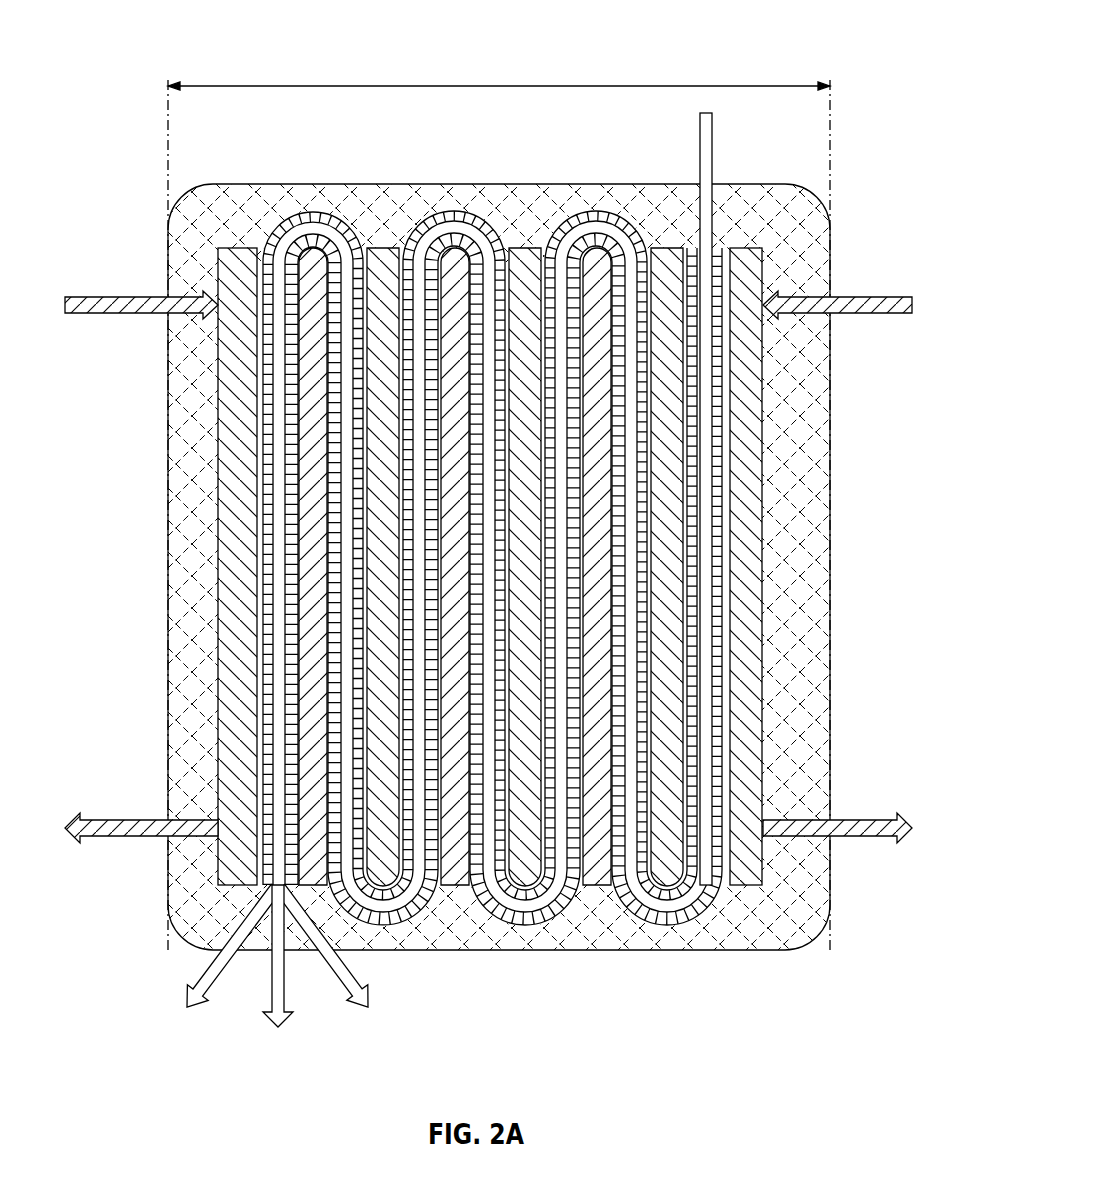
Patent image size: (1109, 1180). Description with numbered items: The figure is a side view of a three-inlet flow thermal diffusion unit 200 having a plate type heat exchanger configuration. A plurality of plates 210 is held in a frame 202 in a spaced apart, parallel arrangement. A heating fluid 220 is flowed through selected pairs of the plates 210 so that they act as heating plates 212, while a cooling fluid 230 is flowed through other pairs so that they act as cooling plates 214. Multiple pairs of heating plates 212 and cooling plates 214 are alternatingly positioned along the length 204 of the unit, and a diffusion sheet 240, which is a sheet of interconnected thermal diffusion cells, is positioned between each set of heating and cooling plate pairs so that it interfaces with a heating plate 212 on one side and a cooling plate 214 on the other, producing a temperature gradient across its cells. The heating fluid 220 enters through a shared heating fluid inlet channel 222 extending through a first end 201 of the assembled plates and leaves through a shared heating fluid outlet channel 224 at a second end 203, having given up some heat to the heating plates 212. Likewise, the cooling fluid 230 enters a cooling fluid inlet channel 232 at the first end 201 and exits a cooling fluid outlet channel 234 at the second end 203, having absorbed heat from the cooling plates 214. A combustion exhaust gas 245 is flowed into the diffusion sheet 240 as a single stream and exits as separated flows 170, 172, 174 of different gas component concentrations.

The thermal diffusion unit 200 is at (855, 44).
The first end 201 is at (846, 178).
The frame 202 is at (278, 185).
The second end 203 is at (840, 968).
The length 204 is at (498, 85).
The plates 210 is at (257, 557).
The heating plates 212 is at (725, 523).
The cooling plates 214 is at (655, 700).
The heating fluid 220 is at (745, 442).
The heating fluid inlet channel 222 is at (845, 297).
The heating fluid outlet channel 224 is at (138, 820).
The cooling fluid 230 is at (672, 777).
The cooling fluid inlet channel 232 is at (135, 297).
The cooling fluid outlet channel 234 is at (870, 820).
The diffusion sheet 240 is at (717, 580).
The combustion exhaust gas 245 is at (699, 140).
The separated flow 170 is at (222, 973).
The separated flow 172 is at (276, 974).
The separated flow 174 is at (334, 973).